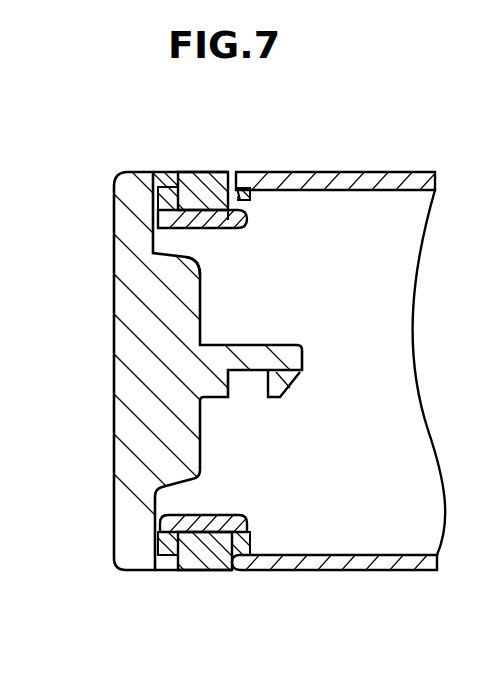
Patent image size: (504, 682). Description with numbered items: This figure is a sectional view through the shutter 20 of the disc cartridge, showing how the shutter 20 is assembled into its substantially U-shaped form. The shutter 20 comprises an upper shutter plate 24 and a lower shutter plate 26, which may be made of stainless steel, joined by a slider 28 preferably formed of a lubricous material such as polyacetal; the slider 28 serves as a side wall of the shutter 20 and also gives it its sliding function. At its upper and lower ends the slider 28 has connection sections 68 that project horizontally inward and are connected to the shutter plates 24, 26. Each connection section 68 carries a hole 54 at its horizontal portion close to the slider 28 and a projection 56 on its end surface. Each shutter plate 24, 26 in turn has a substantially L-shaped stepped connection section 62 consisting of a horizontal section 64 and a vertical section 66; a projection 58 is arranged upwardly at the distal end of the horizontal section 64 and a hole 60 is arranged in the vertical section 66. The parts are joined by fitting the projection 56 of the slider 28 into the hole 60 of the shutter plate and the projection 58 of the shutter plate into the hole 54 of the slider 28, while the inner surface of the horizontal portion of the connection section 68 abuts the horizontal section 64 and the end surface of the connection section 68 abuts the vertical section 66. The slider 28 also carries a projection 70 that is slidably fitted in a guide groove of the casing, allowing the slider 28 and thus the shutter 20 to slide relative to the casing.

The shutter 20 is at (64, 148).
The upper shutter plate 24 is at (333, 172).
The lower shutter plate 26 is at (342, 568).
The slider 28 is at (122, 400).
The hole 54 is at (168, 182).
The projection 56 is at (243, 200).
The projection 58 is at (170, 190).
The hole 60 is at (243, 220).
The stepped connection section 62 is at (178, 235).
The horizontal section 64 is at (217, 228).
The vertical section 66 is at (236, 222).
The connection section 68 is at (207, 182).
The projection 70 is at (283, 380).